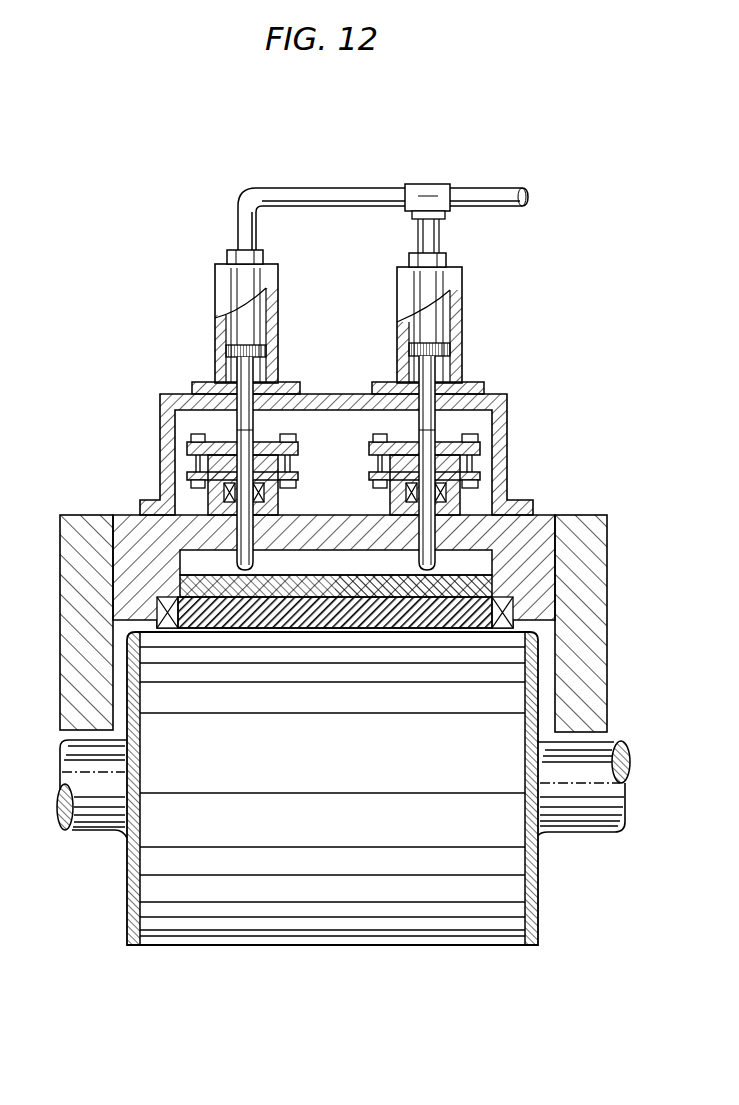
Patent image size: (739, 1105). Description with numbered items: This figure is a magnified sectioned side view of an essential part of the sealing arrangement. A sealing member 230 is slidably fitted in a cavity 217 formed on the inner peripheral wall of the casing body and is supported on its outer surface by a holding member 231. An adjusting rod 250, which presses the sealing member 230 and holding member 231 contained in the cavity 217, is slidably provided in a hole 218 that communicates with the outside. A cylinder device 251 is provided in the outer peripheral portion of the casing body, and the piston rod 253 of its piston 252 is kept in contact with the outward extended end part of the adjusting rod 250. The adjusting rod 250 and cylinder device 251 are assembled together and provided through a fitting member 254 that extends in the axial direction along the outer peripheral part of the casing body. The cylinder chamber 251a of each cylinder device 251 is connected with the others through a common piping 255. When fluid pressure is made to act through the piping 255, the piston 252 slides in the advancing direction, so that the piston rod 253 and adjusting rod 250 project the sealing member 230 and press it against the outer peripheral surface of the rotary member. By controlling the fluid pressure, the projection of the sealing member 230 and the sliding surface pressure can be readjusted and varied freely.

The common piping 255 is at (341, 188).
The cylinder device 251 is at (282, 305).
The cylinder chamber 251a is at (226, 322).
The piston 252 is at (226, 352).
The piston rod 253 is at (260, 372).
The fitting member 254 is at (507, 443).
The hole 218 is at (238, 522).
The adjusting rod 250 is at (231, 599).
The sealing member 230 is at (275, 587).
The holding member 231 is at (338, 589).
The cavity 217 is at (460, 561).